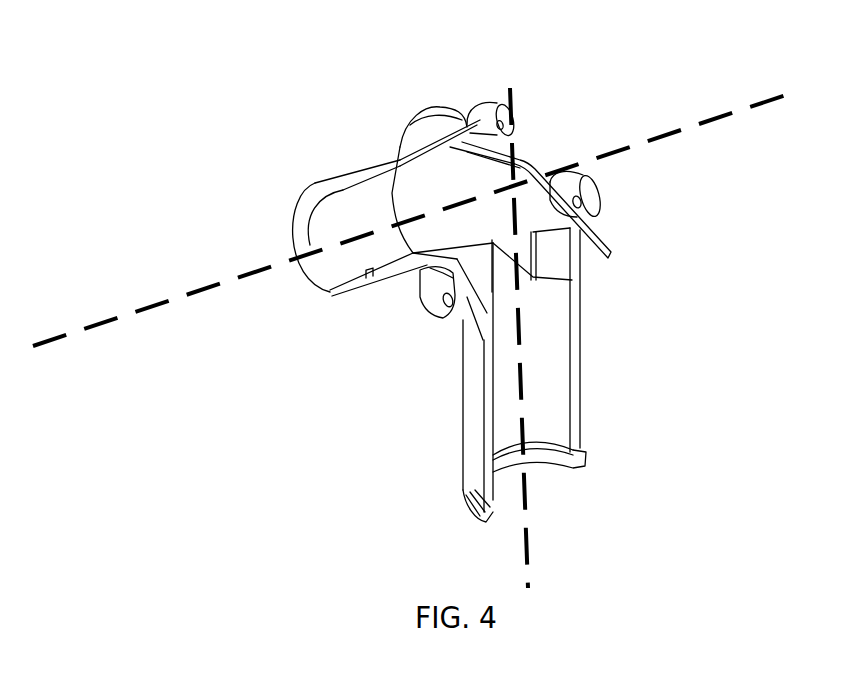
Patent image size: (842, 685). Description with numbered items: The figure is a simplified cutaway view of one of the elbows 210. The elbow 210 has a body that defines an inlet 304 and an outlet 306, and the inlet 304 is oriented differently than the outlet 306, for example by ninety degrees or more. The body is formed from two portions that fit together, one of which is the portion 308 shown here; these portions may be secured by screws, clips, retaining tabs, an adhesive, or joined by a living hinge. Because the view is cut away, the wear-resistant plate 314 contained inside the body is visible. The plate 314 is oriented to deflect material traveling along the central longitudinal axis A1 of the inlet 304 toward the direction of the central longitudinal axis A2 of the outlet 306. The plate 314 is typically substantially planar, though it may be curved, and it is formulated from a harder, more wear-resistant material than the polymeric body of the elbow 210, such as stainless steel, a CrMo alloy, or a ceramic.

The elbow 210 is at (316, 134).
The inlet 304 is at (328, 287).
The outlet 306 is at (575, 467).
The portion of the body 308 is at (438, 126).
The wear-resistant plate 314 is at (584, 228).
The central longitudinal axis of the inlet A1 is at (148, 301).
The central longitudinal axis of the outlet A2 is at (529, 423).